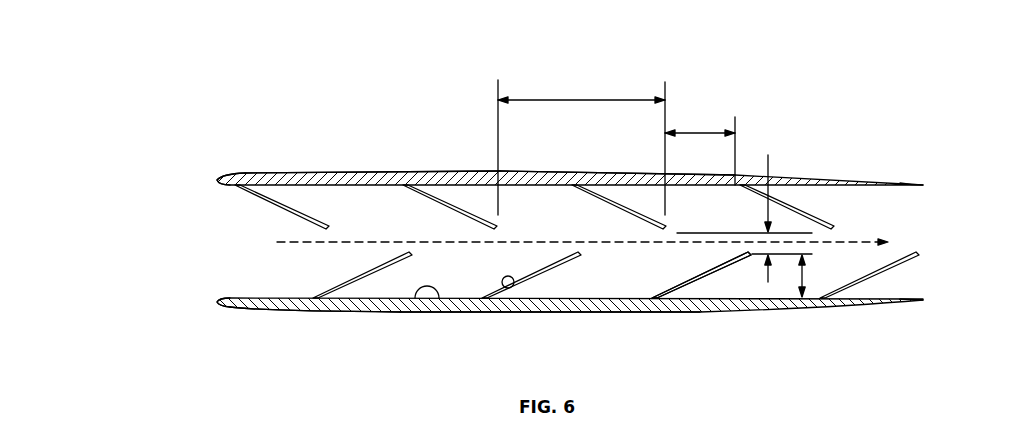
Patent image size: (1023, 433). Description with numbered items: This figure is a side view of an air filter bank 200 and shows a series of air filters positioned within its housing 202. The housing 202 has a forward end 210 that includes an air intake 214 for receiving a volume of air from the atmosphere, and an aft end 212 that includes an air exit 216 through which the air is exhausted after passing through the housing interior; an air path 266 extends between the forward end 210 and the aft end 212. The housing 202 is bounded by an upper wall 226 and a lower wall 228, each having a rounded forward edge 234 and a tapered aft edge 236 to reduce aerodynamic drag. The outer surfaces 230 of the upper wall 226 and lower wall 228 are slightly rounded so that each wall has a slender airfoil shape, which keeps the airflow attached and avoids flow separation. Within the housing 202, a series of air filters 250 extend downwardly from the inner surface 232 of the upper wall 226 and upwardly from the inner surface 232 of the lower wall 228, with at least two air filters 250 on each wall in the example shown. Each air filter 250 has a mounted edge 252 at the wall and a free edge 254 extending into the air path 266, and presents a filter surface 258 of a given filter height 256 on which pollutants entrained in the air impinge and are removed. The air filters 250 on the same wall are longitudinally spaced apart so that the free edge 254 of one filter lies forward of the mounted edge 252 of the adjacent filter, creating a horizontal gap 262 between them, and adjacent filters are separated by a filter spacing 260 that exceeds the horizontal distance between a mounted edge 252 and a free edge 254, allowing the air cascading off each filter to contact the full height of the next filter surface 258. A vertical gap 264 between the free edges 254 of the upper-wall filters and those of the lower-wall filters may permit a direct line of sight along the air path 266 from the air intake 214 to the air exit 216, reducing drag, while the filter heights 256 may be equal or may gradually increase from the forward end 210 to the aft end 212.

The air filter bank 200 is at (420, 88).
The housing 202 is at (567, 170).
The forward end 210 is at (220, 213).
The aft end 212 is at (910, 207).
The air intake 214 is at (213, 275).
The air exit 216 is at (920, 270).
The upper wall 226 is at (295, 173).
The lower wall 228 is at (310, 312).
The outer surface 230 is at (440, 172).
The inner surface 232 is at (440, 312).
The rounded forward edge 234 is at (217, 180).
The tapered aft edge 236 is at (923, 185).
The air filter 250 is at (308, 213).
The mounted edge 252 is at (652, 298).
The free edge 254 is at (748, 254).
The filter height 256 is at (802, 275).
The filter surface 258 is at (512, 290).
The filter spacing 260 is at (573, 100).
The horizontal gap 262 is at (697, 133).
The vertical gap 264 is at (768, 163).
The air path 266 is at (315, 242).